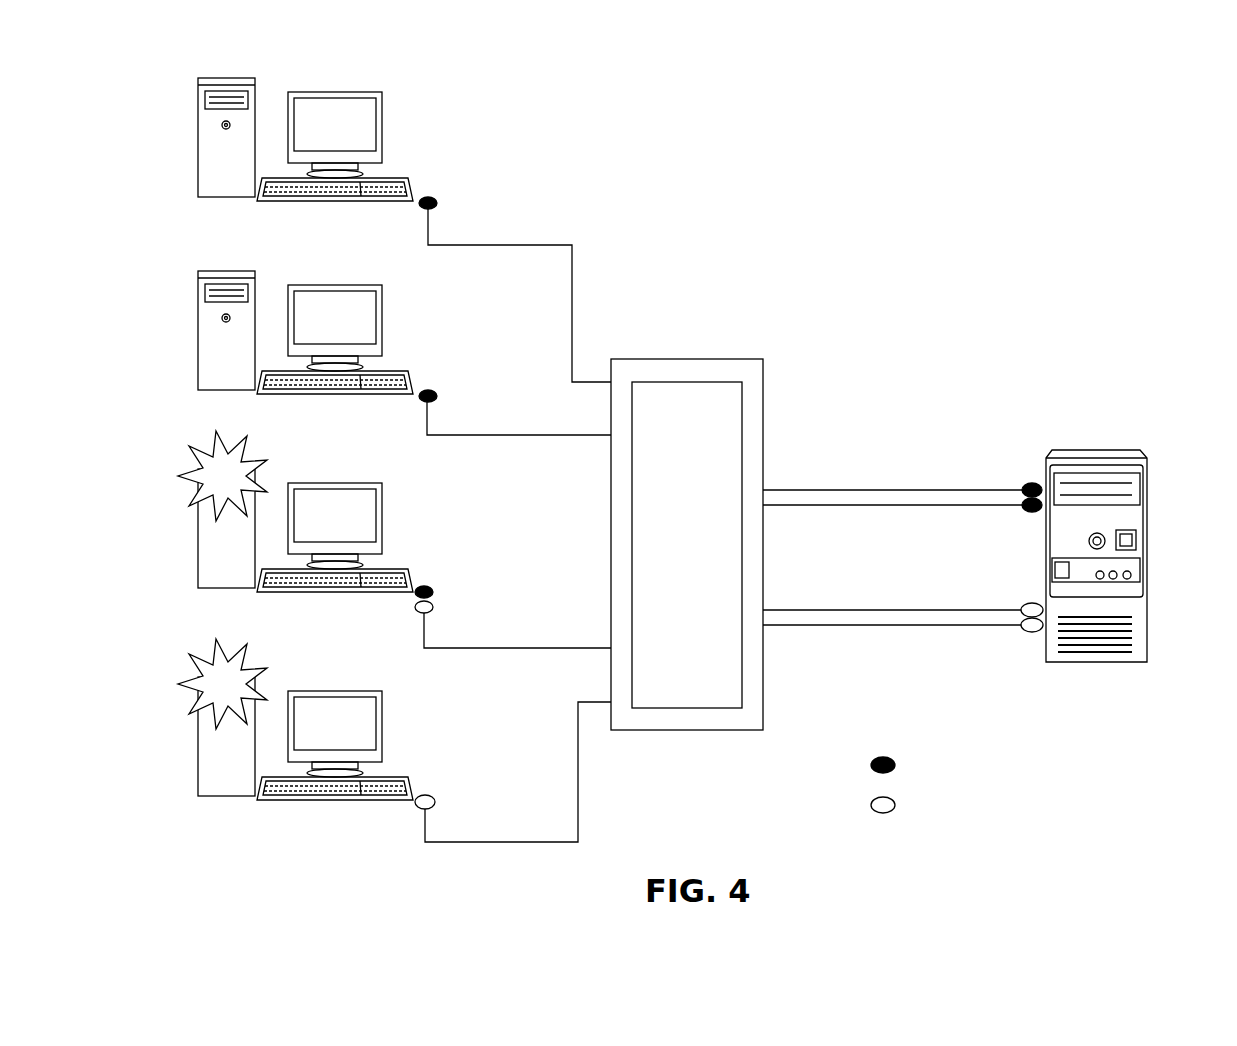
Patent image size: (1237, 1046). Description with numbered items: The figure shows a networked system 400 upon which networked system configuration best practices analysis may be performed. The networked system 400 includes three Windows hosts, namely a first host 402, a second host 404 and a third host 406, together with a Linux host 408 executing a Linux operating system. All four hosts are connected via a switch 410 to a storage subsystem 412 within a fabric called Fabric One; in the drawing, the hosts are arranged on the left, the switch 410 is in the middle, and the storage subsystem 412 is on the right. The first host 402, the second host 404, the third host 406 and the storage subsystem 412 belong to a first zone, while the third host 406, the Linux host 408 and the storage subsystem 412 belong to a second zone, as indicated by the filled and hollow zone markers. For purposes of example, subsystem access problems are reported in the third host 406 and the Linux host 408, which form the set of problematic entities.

The networked system 400 is at (686, 48).
The host W1 402 is at (345, 70).
The host W2 404 is at (345, 263).
The host W3 406 is at (345, 461).
The host L1 408 is at (345, 669).
The switch SW1 410 is at (690, 337).
The storage subsystem SS1 412 is at (1148, 565).